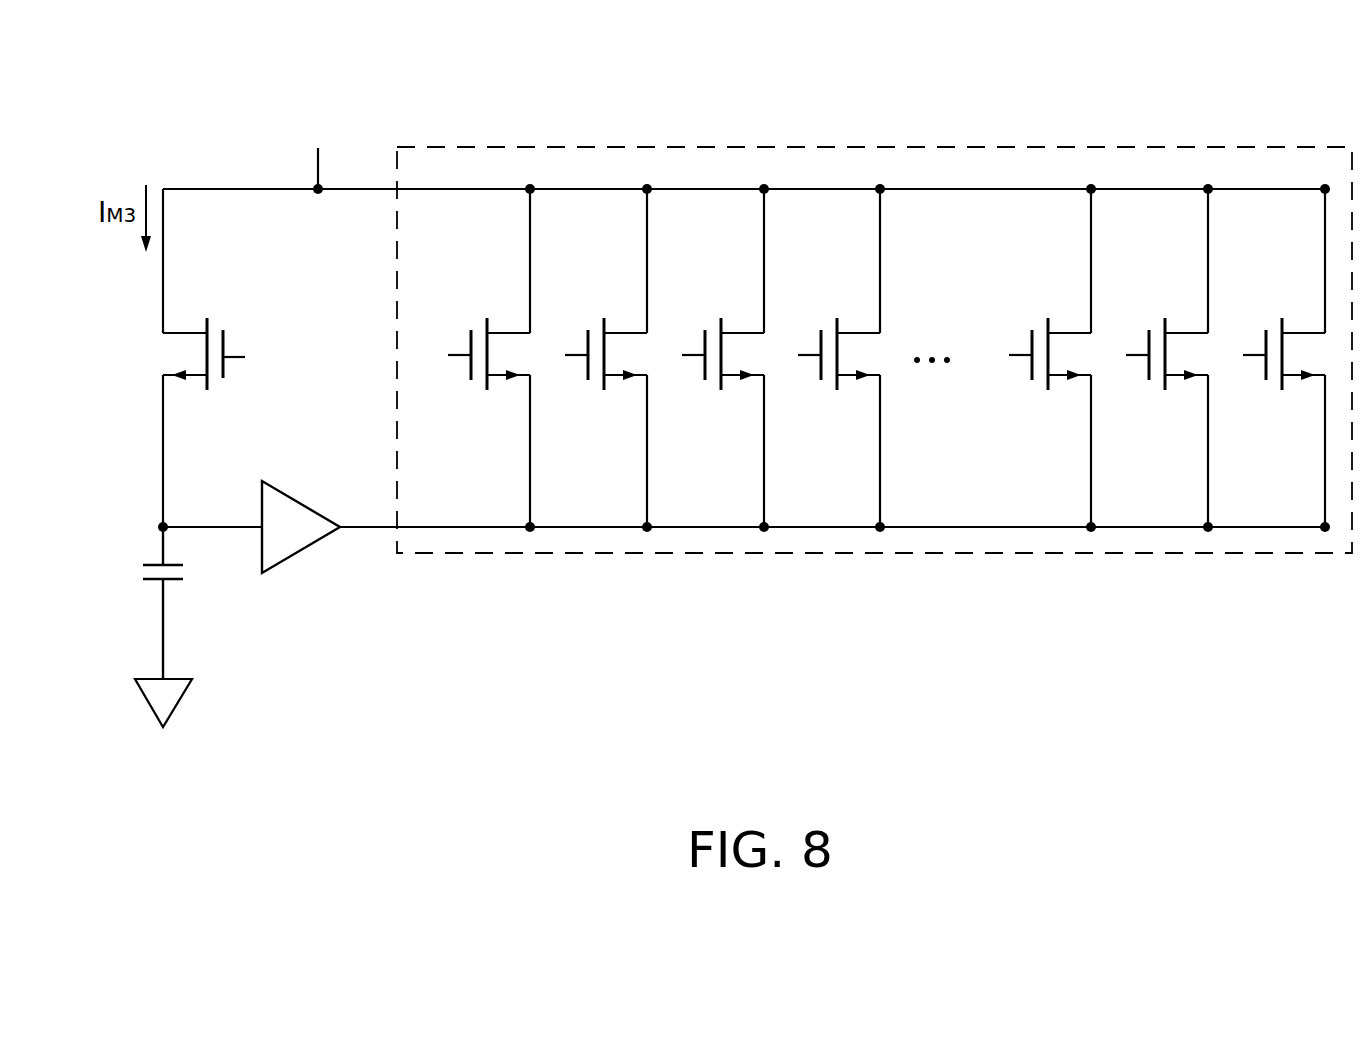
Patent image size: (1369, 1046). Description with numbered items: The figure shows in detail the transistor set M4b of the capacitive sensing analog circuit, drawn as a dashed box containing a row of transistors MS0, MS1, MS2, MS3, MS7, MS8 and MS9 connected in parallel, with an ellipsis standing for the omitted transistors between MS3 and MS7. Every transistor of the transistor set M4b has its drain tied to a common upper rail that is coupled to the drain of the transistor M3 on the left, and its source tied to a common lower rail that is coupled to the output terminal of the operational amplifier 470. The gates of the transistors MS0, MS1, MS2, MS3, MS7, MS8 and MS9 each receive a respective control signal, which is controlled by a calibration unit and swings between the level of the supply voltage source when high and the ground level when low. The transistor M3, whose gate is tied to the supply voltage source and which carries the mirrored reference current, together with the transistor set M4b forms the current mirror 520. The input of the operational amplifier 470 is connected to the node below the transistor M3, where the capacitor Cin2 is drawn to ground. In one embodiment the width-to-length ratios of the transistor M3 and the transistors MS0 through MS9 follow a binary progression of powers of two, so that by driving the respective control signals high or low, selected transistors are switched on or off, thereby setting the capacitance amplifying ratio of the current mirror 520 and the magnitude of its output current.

The operational amplifier 470 is at (302, 503).
The current mirror 520 is at (1172, 636).
The transistor set M4b is at (1250, 147).
The transistor M3 is at (178, 359).
The capacitor Cin2 is at (142, 627).
The transistor MS0 is at (472, 358).
The transistor MS1 is at (589, 358).
The transistor MS2 is at (706, 358).
The transistor MS3 is at (822, 358).
The transistor MS7 is at (1033, 358).
The transistor MS8 is at (1150, 358).
The transistor MS9 is at (1267, 358).